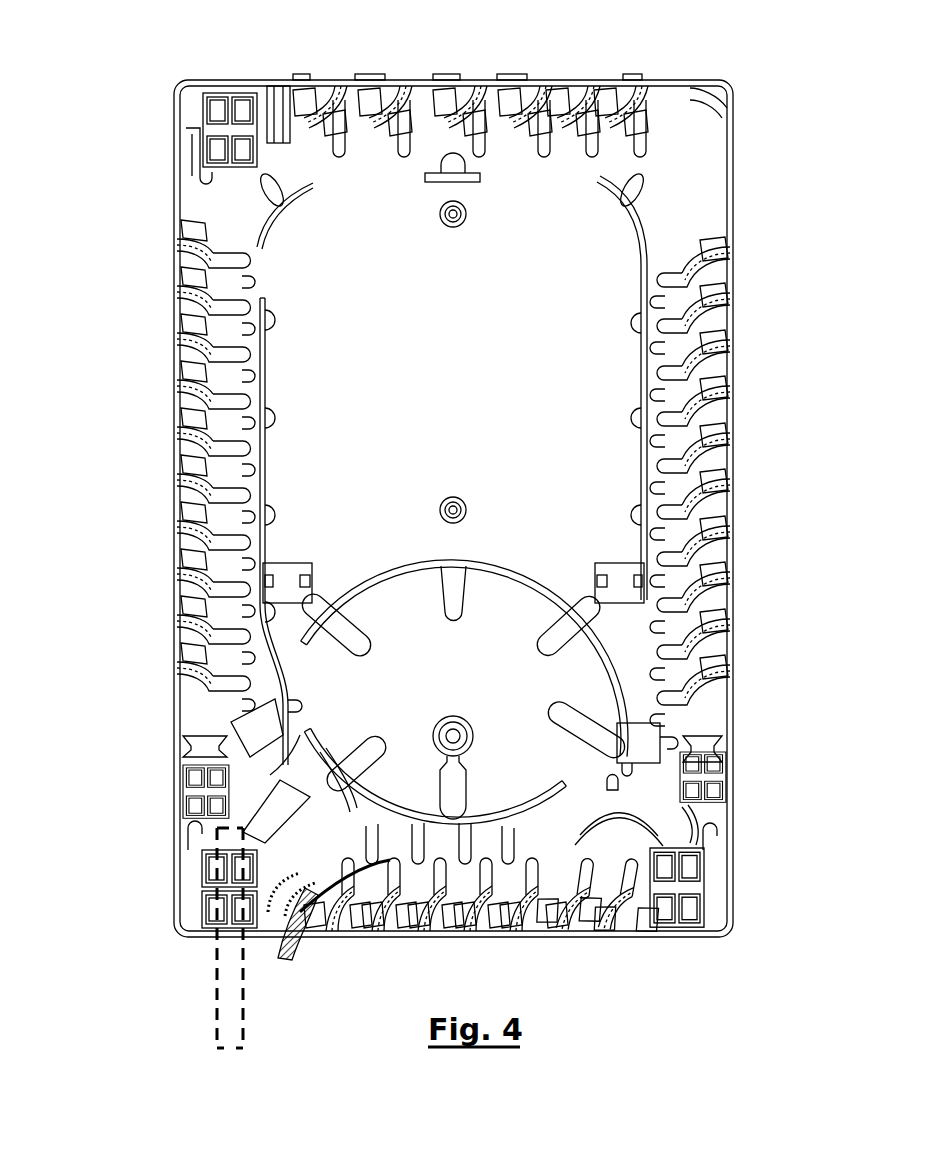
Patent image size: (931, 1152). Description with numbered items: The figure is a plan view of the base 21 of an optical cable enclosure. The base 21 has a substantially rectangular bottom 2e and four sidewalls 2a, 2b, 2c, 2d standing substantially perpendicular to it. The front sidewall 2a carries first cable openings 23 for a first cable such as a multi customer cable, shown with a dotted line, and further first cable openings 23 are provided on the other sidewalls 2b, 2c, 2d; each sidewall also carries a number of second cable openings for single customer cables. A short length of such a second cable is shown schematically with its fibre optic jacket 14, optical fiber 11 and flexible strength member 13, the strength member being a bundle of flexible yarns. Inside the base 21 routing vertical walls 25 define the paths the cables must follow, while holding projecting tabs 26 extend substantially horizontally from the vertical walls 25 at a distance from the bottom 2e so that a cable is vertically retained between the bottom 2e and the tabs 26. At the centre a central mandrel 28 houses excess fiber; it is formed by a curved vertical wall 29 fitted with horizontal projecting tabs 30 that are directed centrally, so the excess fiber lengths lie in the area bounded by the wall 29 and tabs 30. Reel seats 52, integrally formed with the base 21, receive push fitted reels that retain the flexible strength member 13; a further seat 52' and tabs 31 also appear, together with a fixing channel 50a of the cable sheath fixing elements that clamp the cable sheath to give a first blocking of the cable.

The base 21 is at (132, 420).
The front sidewall 2a is at (486, 946).
The sidewall 2b is at (662, 78).
The sidewall 2c is at (739, 475).
The sidewall 2d is at (180, 702).
The bottom 2e is at (452, 459).
The first cable openings 23 is at (230, 80).
The routing vertical walls 25 is at (625, 235).
The holding projecting tabs 26 is at (287, 200).
The central mandrel 28 is at (452, 669).
The curved vertical wall 29 is at (400, 562).
The horizontal projecting tabs 30 is at (553, 615).
The hinge tab 31 is at (368, 76).
The end fibre clip 50a is at (614, 937).
The reel seats 52 is at (451, 395).
The clip hook 52' is at (135, 154).
The optical fibre module 11 is at (330, 880).
The flexible strength member 13 is at (285, 885).
The outer sheath 14 is at (284, 955).